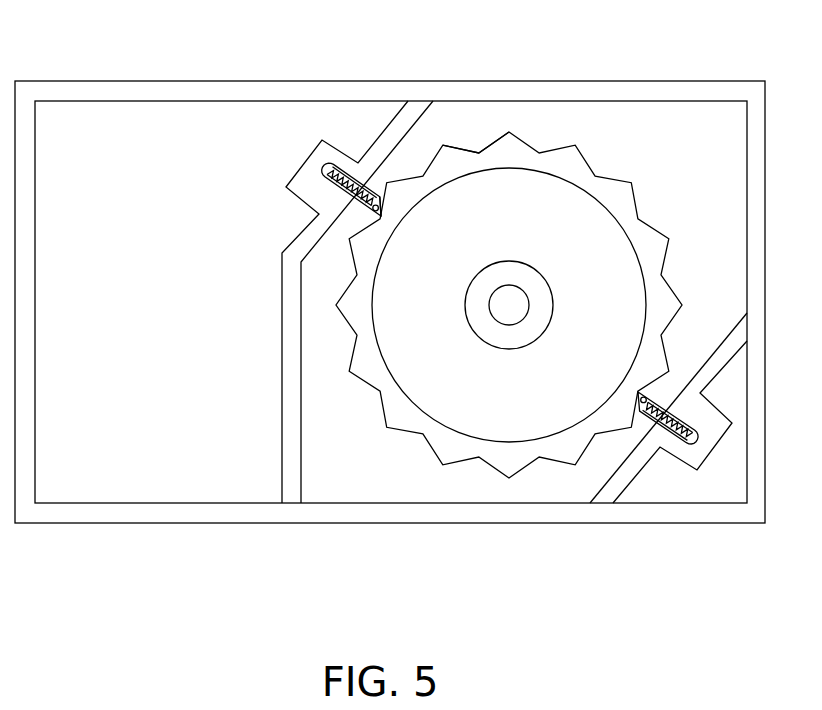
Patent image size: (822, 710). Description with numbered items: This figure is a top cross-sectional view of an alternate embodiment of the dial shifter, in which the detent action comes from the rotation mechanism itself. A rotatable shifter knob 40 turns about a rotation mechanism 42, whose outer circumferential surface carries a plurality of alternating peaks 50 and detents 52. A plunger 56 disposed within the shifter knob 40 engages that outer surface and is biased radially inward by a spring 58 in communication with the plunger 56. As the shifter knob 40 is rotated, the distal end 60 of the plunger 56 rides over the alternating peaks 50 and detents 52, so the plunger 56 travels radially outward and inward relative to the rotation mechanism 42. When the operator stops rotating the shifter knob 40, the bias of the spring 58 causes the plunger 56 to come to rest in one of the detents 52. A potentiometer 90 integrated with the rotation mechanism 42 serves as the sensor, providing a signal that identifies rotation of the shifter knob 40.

The shifter knob 40 is at (569, 246).
The rotation mechanism 42 is at (595, 230).
The peaks 50 is at (510, 132).
The detents 52 is at (479, 153).
The plunger 56 is at (376, 158).
The spring 58 is at (344, 166).
The distal end 60 is at (381, 214).
The potentiometer 90 is at (553, 288).